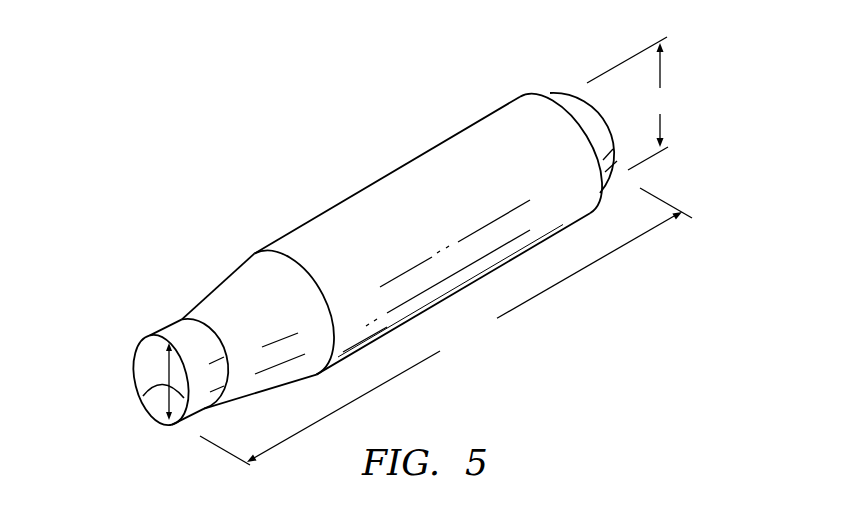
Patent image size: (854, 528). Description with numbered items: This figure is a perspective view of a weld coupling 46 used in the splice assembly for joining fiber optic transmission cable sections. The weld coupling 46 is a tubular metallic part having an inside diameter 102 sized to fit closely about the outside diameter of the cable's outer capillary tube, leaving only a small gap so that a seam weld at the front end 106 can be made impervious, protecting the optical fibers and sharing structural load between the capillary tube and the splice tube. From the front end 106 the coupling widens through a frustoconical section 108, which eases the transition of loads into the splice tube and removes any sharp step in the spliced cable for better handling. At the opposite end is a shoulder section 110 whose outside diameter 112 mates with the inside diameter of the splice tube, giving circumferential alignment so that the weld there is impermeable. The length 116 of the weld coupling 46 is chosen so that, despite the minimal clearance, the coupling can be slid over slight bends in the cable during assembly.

The weld coupling 46 is at (168, 177).
The inside diameter 102 is at (143, 396).
The front end 106 is at (142, 353).
The frustoconical section 108 is at (222, 290).
The shoulder section 110 is at (548, 92).
The outside diameter 112 is at (634, 103).
The length 116 is at (446, 326).